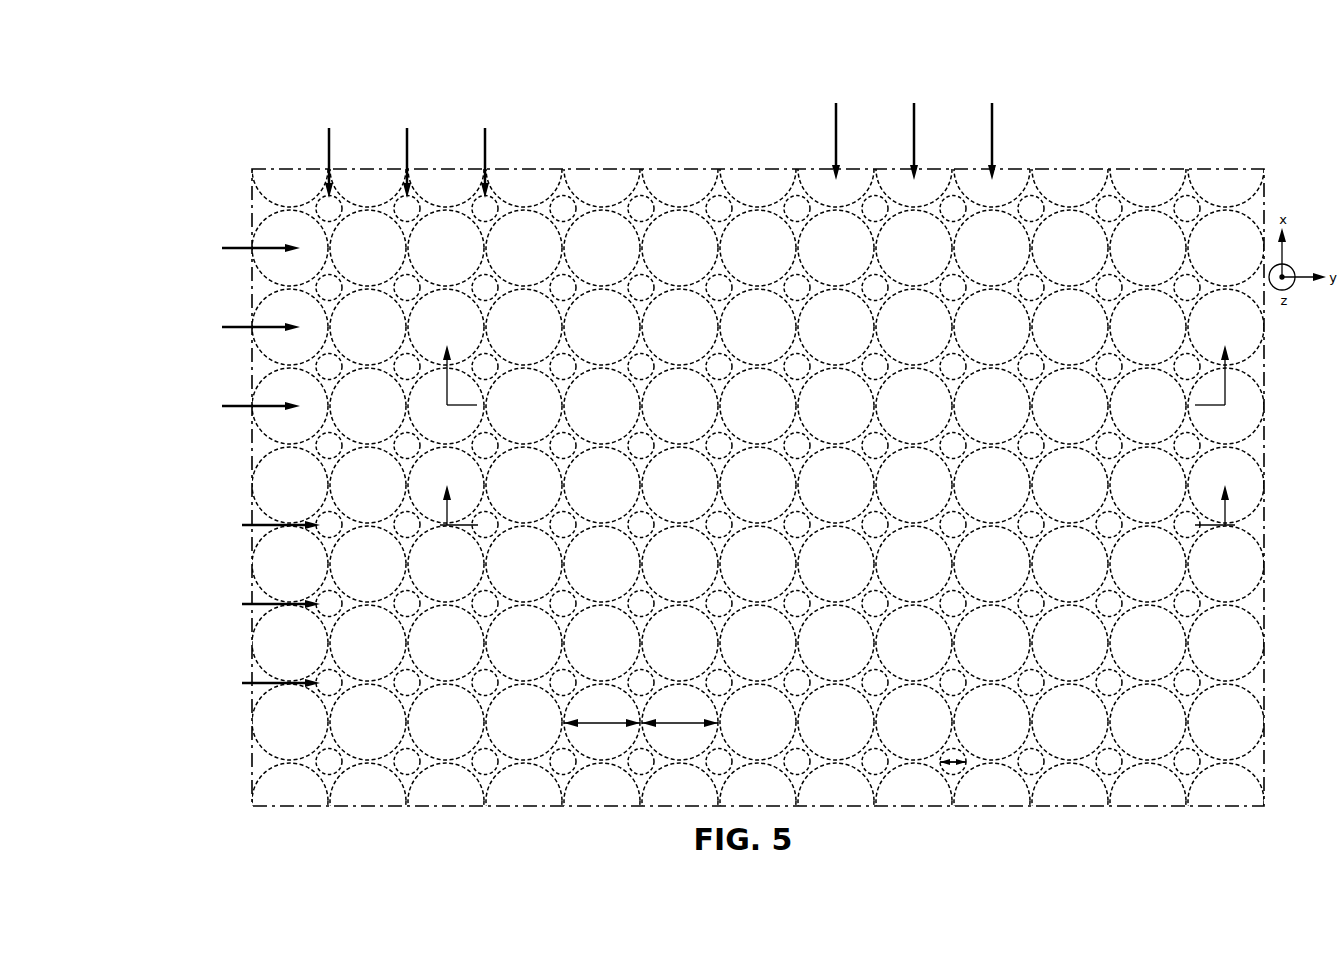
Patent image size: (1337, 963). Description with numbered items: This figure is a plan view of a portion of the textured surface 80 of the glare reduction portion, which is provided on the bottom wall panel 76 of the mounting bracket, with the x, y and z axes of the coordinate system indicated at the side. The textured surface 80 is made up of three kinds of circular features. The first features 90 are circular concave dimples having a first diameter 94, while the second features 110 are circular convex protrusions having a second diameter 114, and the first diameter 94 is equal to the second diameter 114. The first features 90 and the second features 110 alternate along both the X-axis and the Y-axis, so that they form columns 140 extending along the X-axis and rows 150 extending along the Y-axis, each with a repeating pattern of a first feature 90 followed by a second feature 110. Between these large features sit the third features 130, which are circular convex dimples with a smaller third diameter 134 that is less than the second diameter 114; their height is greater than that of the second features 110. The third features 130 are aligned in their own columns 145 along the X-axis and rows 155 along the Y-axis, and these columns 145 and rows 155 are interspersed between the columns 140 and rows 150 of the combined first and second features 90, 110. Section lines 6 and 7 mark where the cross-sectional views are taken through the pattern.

The bottom wall panel 76 is at (527, 185).
The textured surface 80 is at (1039, 145).
The first features 90 is at (677, 230).
The first diameter 94 is at (680, 714).
The second features 110 is at (605, 233).
The second diameter 114 is at (602, 714).
The third features 130 is at (722, 362).
The third diameter 134 is at (948, 760).
The columns 140 is at (820, 98).
The columns 145 is at (315, 123).
The rows 150 is at (222, 236).
The rows 155 is at (240, 515).
The section line 6- 6 is at (836, 363).
The section line 7- 7 is at (837, 492).